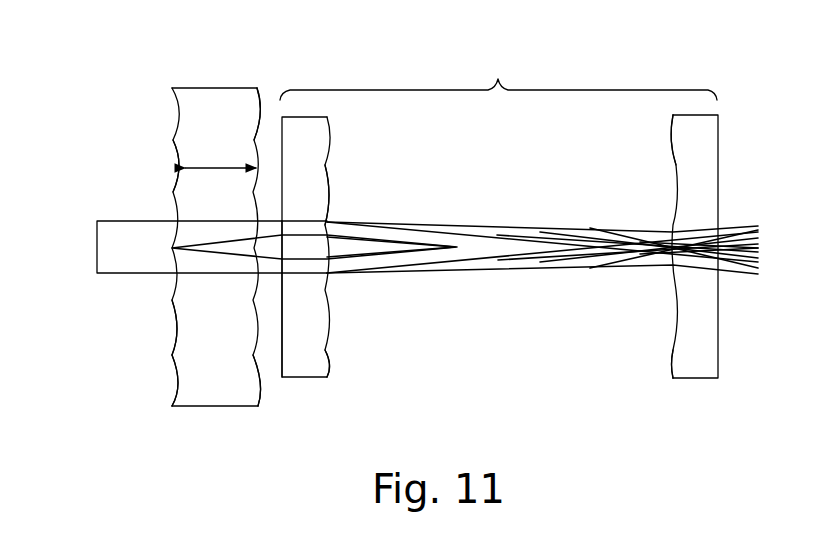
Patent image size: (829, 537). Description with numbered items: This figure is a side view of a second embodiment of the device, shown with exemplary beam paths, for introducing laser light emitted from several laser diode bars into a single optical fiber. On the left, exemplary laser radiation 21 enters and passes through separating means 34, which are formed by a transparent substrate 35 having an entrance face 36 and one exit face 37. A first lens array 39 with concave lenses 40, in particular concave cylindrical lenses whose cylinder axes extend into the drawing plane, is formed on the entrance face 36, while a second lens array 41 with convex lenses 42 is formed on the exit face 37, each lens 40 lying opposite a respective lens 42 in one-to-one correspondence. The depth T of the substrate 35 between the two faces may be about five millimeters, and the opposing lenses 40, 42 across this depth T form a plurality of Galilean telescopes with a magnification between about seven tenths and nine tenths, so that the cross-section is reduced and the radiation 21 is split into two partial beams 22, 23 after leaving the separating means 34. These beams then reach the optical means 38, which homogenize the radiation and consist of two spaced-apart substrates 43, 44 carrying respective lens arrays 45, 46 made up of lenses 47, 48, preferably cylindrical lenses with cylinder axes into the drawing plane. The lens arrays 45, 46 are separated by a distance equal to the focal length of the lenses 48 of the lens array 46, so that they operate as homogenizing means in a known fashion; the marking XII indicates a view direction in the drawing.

The laser radiation 21 is at (112, 243).
The partial beam 22 is at (283, 228).
The partial beam 23 is at (275, 276).
The separating means 34 is at (233, 236).
The transparent substrate 35 is at (215, 247).
The entrance face 36 is at (172, 133).
The exit face 37 is at (280, 106).
The optical means 38 is at (498, 75).
The first lens array 39 is at (172, 390).
The concave lens 40 is at (173, 115).
The second lens array 41 is at (262, 408).
The convex lens 42 is at (266, 108).
The substrate 43 is at (350, 251).
The substrate 44 is at (651, 251).
The lens array 45 is at (338, 362).
The lens array 46 is at (670, 365).
The lens 47 is at (330, 200).
The lens 48 is at (670, 148).
The depth of the substrate T is at (210, 169).
The view direction XII is at (150, 312).